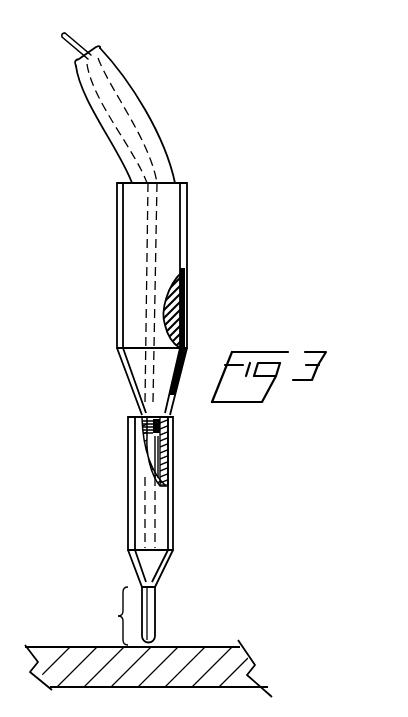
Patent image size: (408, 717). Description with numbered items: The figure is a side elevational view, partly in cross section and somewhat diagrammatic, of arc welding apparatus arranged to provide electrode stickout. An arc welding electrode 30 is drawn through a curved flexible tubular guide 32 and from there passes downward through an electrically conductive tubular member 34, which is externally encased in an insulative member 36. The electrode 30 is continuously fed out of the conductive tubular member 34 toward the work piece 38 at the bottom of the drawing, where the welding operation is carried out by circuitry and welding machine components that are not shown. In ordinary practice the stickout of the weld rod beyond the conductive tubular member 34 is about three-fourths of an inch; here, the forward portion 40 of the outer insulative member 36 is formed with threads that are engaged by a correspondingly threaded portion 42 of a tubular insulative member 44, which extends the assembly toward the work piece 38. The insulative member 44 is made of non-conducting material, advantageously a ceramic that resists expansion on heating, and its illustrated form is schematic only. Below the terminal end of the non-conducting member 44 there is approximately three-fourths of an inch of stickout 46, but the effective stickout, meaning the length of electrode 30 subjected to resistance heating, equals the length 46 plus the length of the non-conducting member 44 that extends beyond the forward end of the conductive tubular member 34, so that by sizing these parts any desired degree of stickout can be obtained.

The arc welding electrode 30 is at (77, 43).
The flexible tubular guide 32 is at (162, 146).
The electrically conductive tubular member 34 is at (178, 298).
The insulative member 36 is at (183, 318).
The work piece 38 is at (240, 658).
The forward portion 40 is at (173, 422).
The threaded portion 42 is at (138, 435).
The tubular insulative member 44 is at (133, 520).
The stickout 46 is at (103, 616).